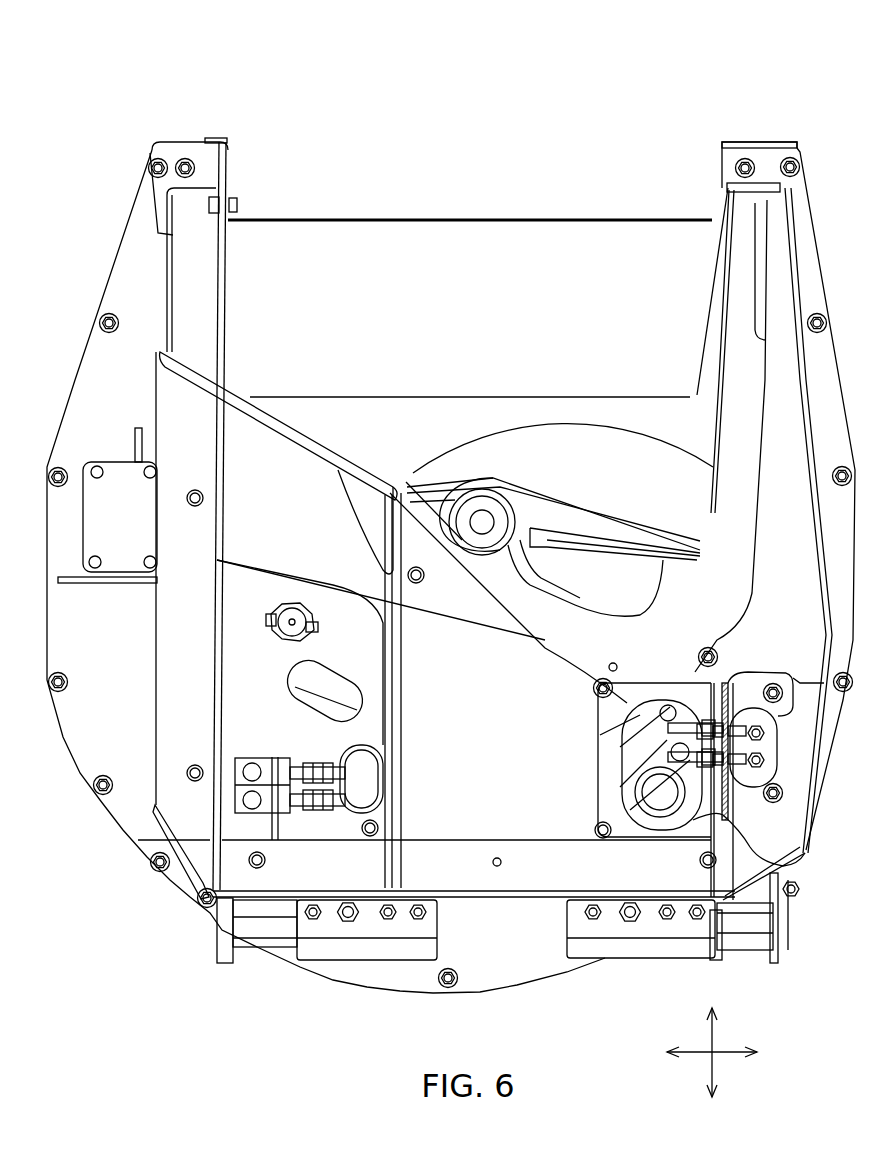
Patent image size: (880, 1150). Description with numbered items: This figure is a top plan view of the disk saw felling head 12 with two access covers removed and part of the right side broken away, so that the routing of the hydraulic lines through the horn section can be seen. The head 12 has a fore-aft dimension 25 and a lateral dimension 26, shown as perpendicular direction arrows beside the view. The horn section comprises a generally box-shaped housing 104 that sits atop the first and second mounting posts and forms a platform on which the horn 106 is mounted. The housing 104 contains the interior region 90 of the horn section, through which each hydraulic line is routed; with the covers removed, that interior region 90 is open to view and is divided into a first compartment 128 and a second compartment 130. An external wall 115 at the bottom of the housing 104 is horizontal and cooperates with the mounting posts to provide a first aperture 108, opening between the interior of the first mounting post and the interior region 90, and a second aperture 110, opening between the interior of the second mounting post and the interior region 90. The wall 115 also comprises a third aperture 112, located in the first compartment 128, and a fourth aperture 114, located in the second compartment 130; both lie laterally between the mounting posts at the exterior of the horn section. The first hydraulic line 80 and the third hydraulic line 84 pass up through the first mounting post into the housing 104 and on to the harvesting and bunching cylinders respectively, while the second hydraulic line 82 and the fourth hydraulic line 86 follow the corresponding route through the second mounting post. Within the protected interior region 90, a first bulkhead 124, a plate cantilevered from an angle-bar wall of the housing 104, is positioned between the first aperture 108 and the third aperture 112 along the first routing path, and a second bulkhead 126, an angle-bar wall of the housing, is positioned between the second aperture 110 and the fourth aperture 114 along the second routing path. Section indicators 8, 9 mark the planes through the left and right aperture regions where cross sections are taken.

The head 12 is at (150, 86).
The second aperture 110 is at (793, 680).
The interior region 90 is at (258, 585).
The external wall 115 is at (360, 655).
The horn 106 is at (718, 572).
The first compartment 128 is at (257, 650).
The first bulkhead 124 is at (277, 760).
The first aperture 108 is at (262, 808).
The first hydraulic line 80 is at (337, 760).
The third aperture 112 is at (367, 753).
The section line 8 is at (307, 785).
The third hydraulic line 84 is at (345, 825).
The housing 104 is at (440, 820).
The second bulkhead 126 is at (697, 820).
The fourth hydraulic line 86 is at (650, 820).
The second hydraulic line 82 is at (652, 707).
The fourth aperture 114 is at (670, 705).
The second compartment 130 is at (703, 698).
The section line 9 is at (701, 748).
The lateral dimension 26 is at (730, 1050).
The fore-aft dimension 25 is at (720, 1067).